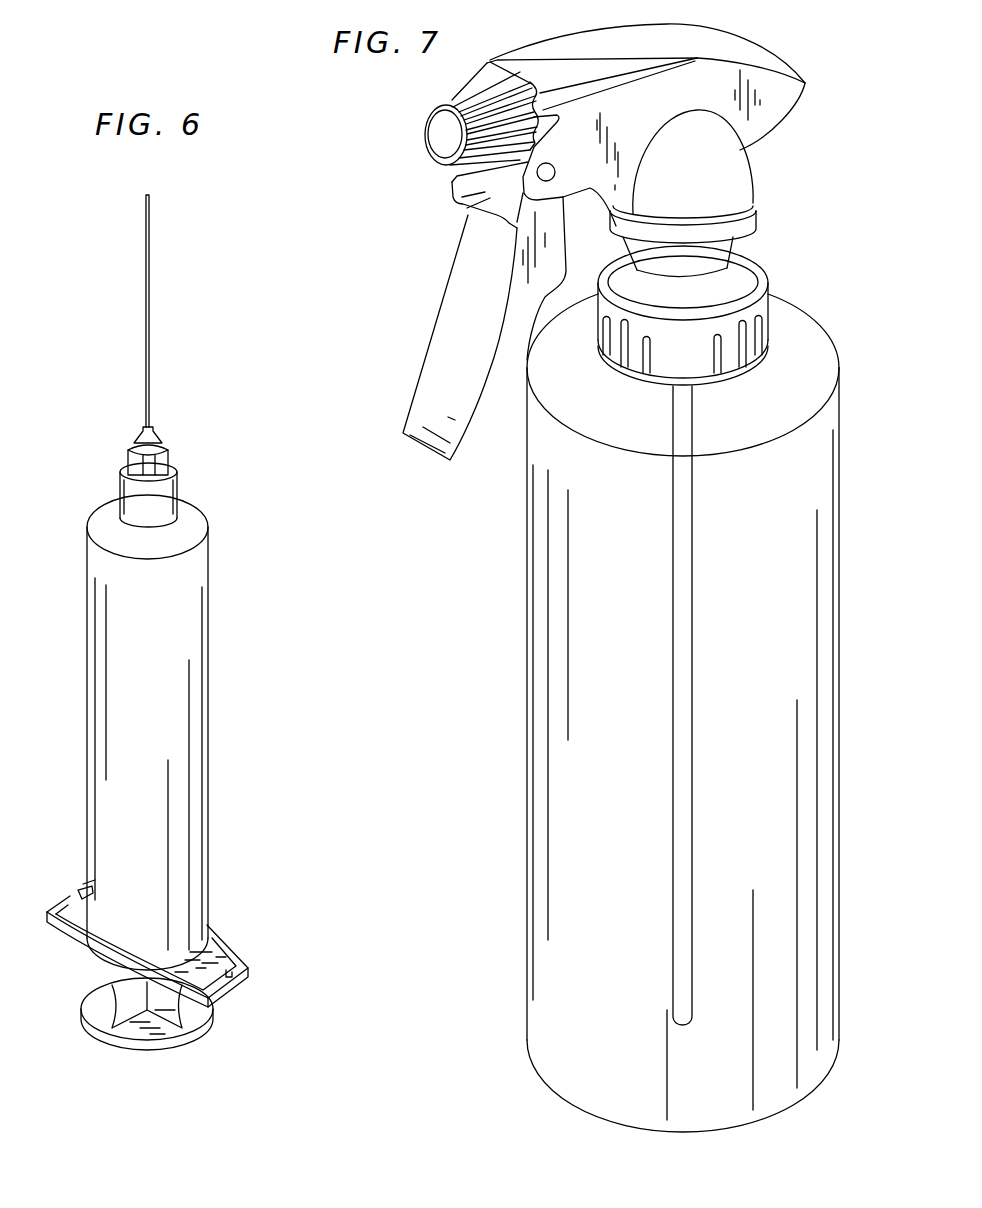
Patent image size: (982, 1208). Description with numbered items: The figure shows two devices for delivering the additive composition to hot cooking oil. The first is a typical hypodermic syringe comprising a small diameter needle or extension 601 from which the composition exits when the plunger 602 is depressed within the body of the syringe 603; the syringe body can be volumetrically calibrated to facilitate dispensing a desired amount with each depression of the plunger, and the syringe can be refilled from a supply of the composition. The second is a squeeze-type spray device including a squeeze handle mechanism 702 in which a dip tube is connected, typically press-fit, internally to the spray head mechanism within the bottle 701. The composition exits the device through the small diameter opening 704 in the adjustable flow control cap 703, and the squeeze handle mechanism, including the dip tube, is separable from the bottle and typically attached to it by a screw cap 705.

In FIG. 6, the small diameter needle or extension 601 is at (147, 300).
In FIG. 6, the plunger 602 is at (82, 1016).
In FIG. 6, the body of the syringe 603 is at (88, 706).
In FIG. 7, the bottle 701 is at (527, 743).
In FIG. 7, the squeeze handle mechanism 702 is at (418, 403).
In FIG. 7, the adjustable flow control cap 703 is at (430, 112).
In FIG. 7, the small diameter opening 704 is at (445, 136).
In FIG. 7, the screw cap 705 is at (767, 290).